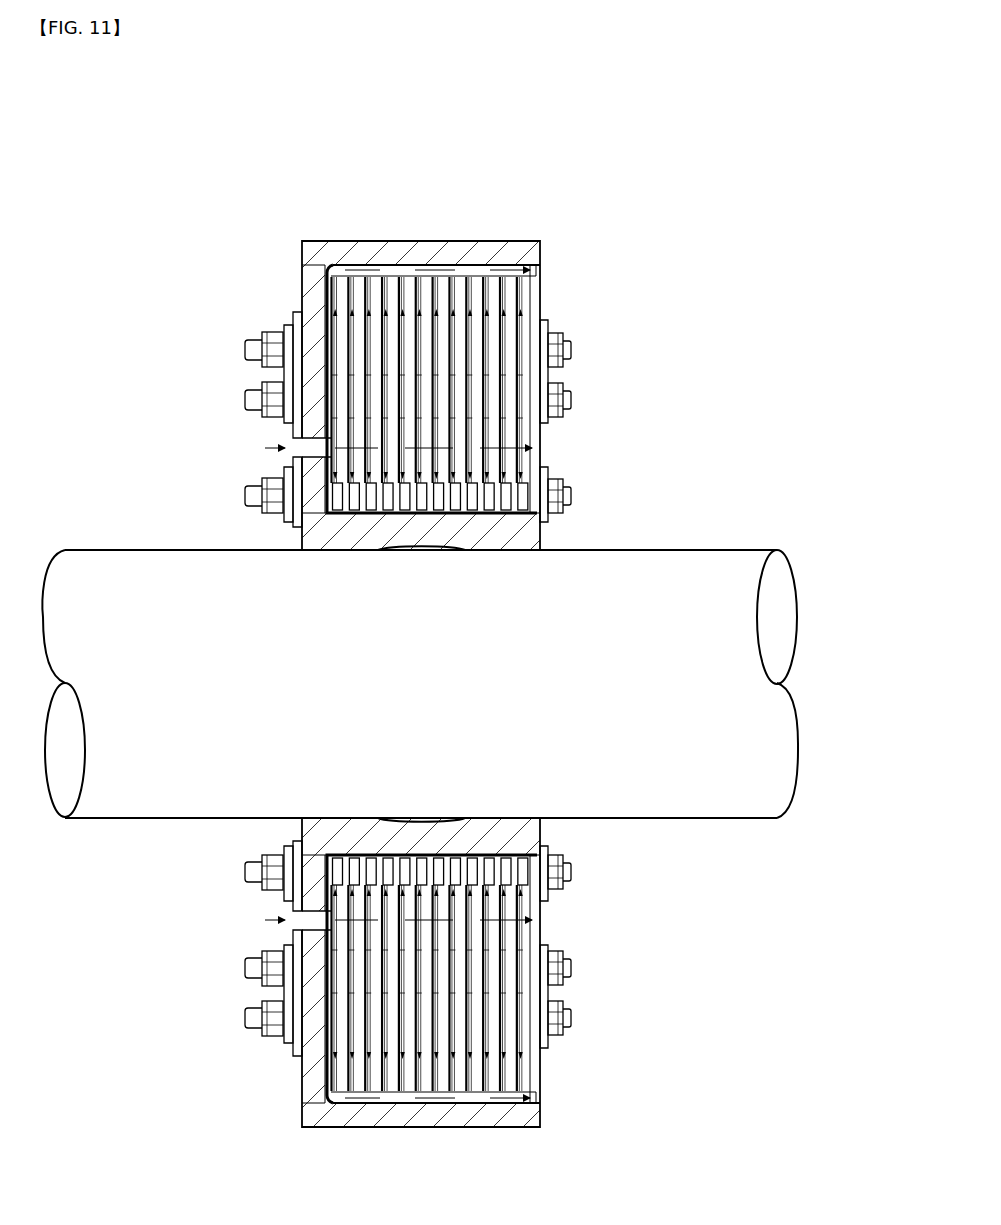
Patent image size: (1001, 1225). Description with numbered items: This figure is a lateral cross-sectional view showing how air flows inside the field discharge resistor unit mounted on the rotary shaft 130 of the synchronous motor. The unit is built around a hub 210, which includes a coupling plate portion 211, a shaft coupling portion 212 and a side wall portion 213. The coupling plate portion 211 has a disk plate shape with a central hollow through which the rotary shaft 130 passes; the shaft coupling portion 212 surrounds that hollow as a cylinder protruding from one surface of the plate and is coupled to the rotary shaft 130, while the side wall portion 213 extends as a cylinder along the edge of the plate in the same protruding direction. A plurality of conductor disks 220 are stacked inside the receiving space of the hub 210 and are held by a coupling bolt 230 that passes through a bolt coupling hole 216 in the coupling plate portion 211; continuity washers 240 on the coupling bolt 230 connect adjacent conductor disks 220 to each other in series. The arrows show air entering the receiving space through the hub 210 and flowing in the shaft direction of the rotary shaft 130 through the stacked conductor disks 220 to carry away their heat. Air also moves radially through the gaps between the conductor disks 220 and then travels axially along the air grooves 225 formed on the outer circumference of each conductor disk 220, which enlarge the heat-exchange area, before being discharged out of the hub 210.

The rotary shaft 130 is at (710, 567).
The hub 210 is at (372, 241).
The coupling plate portion 211 is at (310, 303).
The shaft coupling portion 212 is at (530, 535).
The side wall portion 213 is at (462, 253).
The bolt coupling hole 216 is at (310, 438).
The conductor disk 220 is at (535, 300).
The air groove 225 is at (520, 265).
The coupling bolt 230 is at (564, 350).
The continuity washer 240 is at (522, 363).